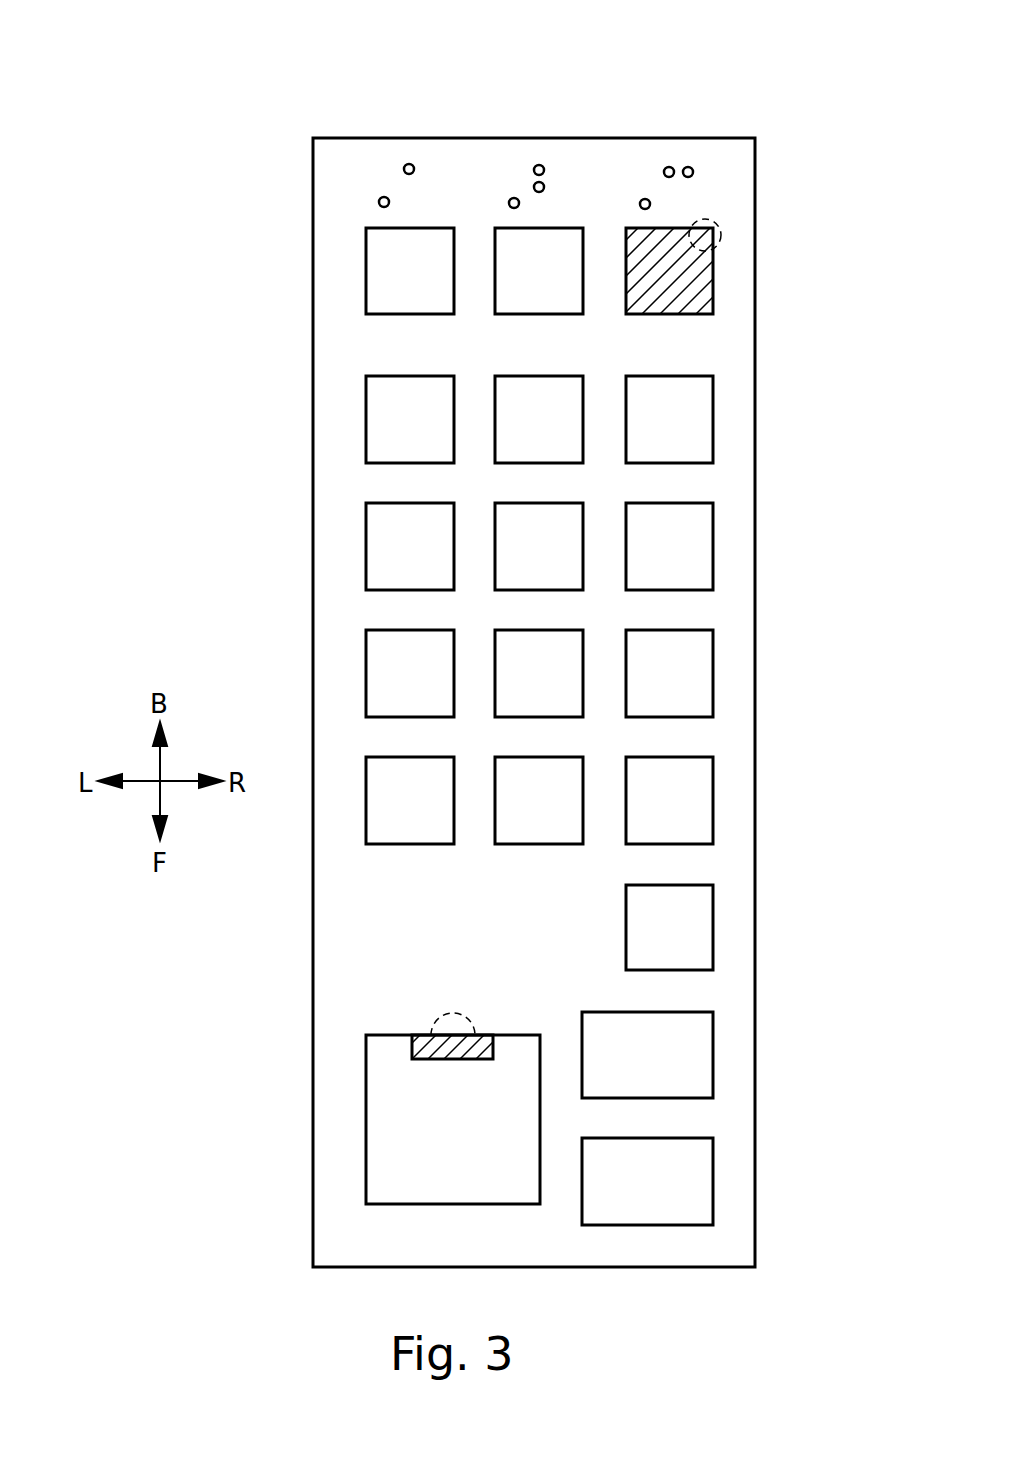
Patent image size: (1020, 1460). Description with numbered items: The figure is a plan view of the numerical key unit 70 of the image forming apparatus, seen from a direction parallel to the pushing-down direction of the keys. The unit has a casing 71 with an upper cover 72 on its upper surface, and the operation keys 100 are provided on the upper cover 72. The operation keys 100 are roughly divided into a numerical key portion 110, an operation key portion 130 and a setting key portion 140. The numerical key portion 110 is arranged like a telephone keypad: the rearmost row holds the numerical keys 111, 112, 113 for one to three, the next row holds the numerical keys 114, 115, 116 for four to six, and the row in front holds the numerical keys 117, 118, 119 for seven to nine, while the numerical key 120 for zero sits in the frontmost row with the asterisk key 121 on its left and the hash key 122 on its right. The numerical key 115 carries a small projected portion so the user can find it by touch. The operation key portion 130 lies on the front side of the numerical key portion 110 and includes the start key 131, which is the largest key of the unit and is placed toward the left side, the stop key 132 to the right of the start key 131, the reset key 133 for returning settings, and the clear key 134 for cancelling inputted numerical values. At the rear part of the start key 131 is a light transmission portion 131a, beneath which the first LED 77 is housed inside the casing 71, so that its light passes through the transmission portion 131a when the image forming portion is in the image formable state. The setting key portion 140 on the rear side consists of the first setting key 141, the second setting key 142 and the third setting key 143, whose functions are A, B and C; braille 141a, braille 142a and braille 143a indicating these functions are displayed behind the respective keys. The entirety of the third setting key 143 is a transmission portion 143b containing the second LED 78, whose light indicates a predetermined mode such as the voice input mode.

The numerical key unit 70 is at (277, 75).
The casing 71 is at (313, 557).
The upper cover 72 is at (332, 358).
The first LED 77 is at (457, 1012).
The second LED 78 is at (713, 218).
The operation keys 100 is at (795, 1269).
The numerical key portion 110 is at (772, 375).
The numerical key 111 is at (378, 376).
The numerical key 112 is at (508, 376).
The numerical key 113 is at (638, 376).
The numerical key 114 is at (388, 503).
The numerical key 115 is at (518, 503).
The numerical key 116 is at (648, 503).
The numerical key 117 is at (378, 630).
The numerical key 118 is at (508, 630).
The numerical key 119 is at (638, 630).
The numerical key 120 is at (508, 757).
The asterisk key 121 is at (378, 757).
The hash key 122 is at (638, 757).
The operation key portion 130 is at (773, 885).
The start key 131 is at (383, 1035).
The transmission portion 131a is at (412, 1047).
The stop key 132 is at (582, 1212).
The reset key 133 is at (616, 1012).
The clear key 134 is at (626, 935).
The setting key portion 140 is at (772, 228).
The first setting key 141 is at (433, 228).
The braille 141a is at (397, 180).
The second setting key 142 is at (568, 228).
The braille 142a is at (523, 183).
The third setting key 143 is at (670, 228).
The braille 143a is at (660, 183).
The transmission portion 143b is at (713, 297).